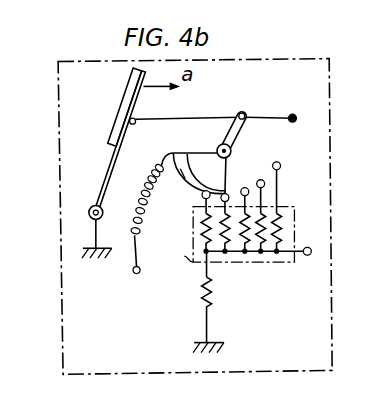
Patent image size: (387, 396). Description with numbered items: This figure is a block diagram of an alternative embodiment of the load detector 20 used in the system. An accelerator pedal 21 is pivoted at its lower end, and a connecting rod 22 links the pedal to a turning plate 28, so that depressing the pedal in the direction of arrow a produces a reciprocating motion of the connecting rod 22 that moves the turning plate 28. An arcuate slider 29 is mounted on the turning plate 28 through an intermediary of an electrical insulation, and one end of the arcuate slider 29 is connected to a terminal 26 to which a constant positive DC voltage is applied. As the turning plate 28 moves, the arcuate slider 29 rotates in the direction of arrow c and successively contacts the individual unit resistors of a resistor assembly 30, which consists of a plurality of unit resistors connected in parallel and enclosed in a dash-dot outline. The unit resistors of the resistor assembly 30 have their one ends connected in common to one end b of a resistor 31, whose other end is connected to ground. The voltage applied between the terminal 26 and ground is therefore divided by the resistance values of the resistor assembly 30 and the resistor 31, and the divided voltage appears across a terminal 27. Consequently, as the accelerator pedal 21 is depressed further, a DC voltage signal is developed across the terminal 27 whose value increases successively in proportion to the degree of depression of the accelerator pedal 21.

The load detector 20 is at (57, 190).
The accelerator pedal 21 is at (118, 115).
The connecting rod 22 is at (183, 118).
The terminal 26 is at (138, 273).
The terminal 27 is at (308, 255).
The turning plate 28 is at (246, 137).
The arcuate slider 29 is at (232, 192).
The resistor assembly 30 is at (193, 206).
The resistor 31 is at (211, 282).